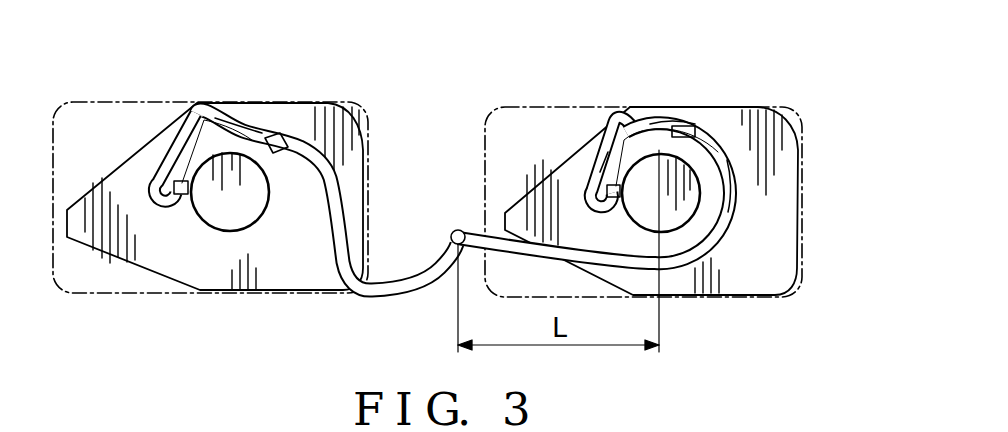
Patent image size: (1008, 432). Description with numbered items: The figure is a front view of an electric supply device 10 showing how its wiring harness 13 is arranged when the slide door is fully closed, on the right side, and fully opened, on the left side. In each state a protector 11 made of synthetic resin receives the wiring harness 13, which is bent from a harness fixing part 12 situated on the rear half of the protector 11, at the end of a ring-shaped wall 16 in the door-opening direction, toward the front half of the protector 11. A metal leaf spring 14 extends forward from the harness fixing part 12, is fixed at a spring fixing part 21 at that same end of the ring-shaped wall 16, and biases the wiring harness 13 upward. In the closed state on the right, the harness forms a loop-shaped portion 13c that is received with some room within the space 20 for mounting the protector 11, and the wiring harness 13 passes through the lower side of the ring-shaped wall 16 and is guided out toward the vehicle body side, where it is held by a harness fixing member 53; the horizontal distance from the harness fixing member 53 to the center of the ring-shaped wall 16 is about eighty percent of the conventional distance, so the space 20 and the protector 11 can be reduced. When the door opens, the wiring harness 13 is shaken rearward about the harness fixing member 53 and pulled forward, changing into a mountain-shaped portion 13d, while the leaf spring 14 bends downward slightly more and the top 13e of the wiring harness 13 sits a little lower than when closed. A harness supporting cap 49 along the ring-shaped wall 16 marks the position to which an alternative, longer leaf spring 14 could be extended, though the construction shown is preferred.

The electric supply device 10 is at (783, 90).
The protector 11 is at (350, 130).
The harness fixing part 12 is at (155, 183).
The wiring harness 13 is at (473, 149).
The loop-shaped portion 13c is at (728, 163).
The mountain-shaped portion 13d is at (268, 135).
The top of the wiring harness 13e is at (240, 121).
The leaf spring 14 is at (253, 148).
The ring-shaped wall 16 is at (220, 230).
The space 20 is at (210, 295).
The spring fixing part 21 is at (607, 186).
The harness supporting cap 49 is at (683, 129).
The harness fixing member 53 is at (458, 230).